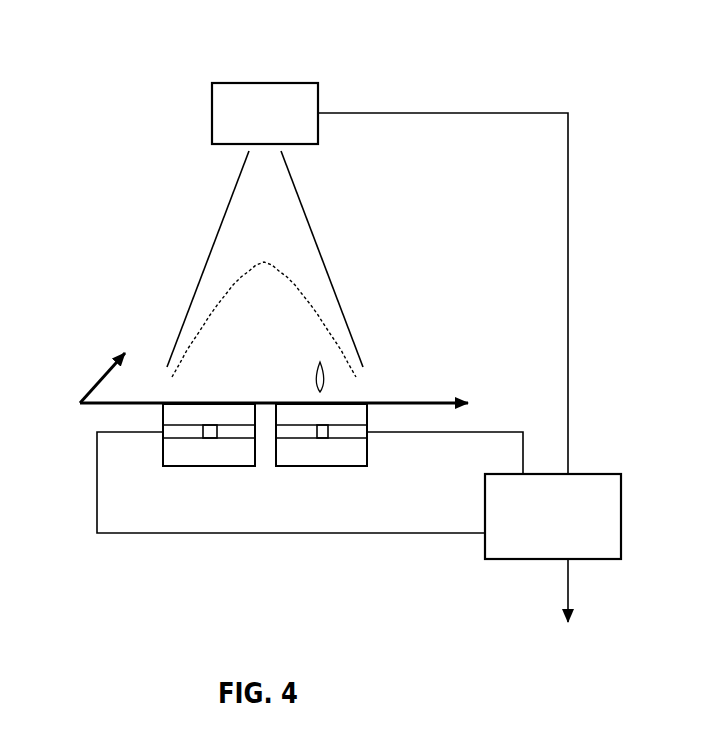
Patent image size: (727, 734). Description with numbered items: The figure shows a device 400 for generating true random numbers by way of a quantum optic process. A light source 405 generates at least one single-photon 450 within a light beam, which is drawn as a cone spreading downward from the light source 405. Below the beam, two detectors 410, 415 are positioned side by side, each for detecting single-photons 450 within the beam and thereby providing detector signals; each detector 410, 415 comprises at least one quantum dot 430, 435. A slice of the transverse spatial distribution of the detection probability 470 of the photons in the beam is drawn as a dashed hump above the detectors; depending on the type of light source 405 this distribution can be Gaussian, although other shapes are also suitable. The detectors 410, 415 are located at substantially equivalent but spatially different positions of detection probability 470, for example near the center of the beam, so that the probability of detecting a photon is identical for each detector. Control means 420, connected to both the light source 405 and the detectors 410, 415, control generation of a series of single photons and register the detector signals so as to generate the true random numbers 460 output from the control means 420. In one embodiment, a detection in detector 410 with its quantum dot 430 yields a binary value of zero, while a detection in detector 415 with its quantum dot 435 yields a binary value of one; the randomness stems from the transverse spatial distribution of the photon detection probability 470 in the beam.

The device 400 is at (72, 64).
The light source 405 is at (295, 97).
The detector 410 is at (156, 466).
The detector 415 is at (373, 460).
The control means 420 is at (613, 520).
The quantum dot 430 is at (207, 440).
The quantum dot 435 is at (320, 440).
The single-photon 450 is at (325, 382).
The true random numbers 460 is at (556, 626).
The detection probability 470 is at (326, 330).